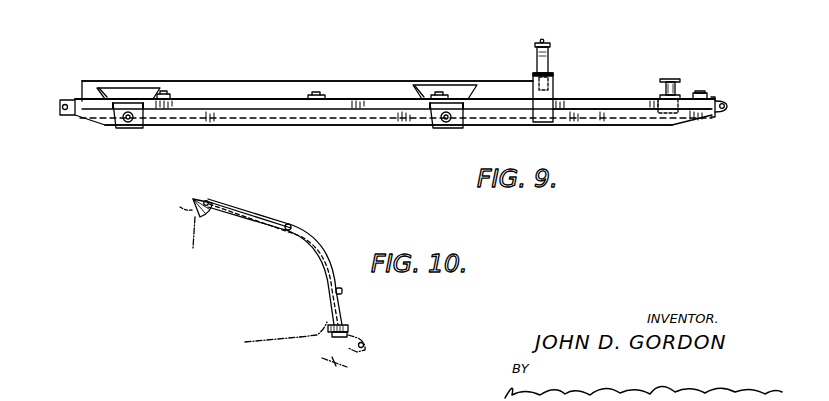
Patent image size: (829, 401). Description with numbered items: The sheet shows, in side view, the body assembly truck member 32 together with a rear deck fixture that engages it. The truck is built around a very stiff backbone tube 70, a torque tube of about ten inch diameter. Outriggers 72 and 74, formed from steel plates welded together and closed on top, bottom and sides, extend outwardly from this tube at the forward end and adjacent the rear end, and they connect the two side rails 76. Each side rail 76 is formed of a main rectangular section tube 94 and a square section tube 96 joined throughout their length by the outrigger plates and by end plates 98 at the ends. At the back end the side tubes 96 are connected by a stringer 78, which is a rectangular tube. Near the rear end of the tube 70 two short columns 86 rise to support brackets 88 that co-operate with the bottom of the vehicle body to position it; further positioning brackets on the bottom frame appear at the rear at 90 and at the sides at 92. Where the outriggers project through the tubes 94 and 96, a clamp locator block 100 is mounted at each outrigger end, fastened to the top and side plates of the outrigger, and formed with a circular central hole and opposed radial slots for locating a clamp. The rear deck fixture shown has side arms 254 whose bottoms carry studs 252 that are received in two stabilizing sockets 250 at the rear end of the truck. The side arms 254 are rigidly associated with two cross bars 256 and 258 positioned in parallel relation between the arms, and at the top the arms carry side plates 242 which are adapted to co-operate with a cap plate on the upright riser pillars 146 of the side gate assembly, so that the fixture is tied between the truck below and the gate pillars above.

In FIG. 9, the truck member 32 is at (275, 80).
In FIG. 9, the tube 70 is at (503, 95).
In FIG. 9, the outrigger 72 is at (133, 92).
In FIG. 9, the outrigger 74 is at (425, 85).
In FIG. 10, the side rail 76 is at (347, 370).
In FIG. 9, the stringer 78 is at (660, 98).
In FIG. 9, the column 86 is at (549, 55).
In FIG. 9, the bracket 88 is at (543, 40).
In FIG. 9, the positioning bracket 90 is at (678, 82).
In FIG. 9, the positioning bracket 92 is at (172, 98).
In FIG. 9, the main rectangular section tube 94 is at (602, 120).
In FIG. 9, the square section tube 96 is at (570, 100).
In FIG. 9, the end plate 98 is at (65, 98).
In FIG. 9, the clamp locator block 100 is at (140, 127).
In FIG. 10, the riser 146 is at (198, 235).
In FIG. 10, the side plate 242 is at (194, 198).
In FIG. 10, the stabilizing socket 250 is at (350, 332).
In FIG. 10, the stud 252 is at (343, 325).
In FIG. 10, the side arm 254 is at (322, 242).
In FIG. 10, the cross bar 256 is at (292, 224).
In FIG. 10, the cross bar 258 is at (343, 291).